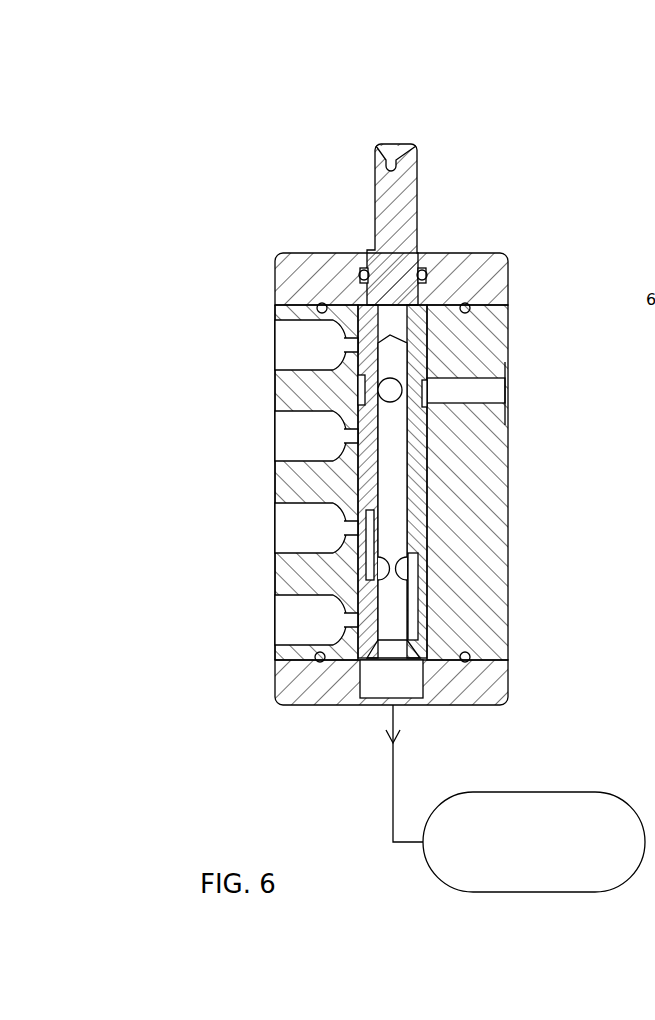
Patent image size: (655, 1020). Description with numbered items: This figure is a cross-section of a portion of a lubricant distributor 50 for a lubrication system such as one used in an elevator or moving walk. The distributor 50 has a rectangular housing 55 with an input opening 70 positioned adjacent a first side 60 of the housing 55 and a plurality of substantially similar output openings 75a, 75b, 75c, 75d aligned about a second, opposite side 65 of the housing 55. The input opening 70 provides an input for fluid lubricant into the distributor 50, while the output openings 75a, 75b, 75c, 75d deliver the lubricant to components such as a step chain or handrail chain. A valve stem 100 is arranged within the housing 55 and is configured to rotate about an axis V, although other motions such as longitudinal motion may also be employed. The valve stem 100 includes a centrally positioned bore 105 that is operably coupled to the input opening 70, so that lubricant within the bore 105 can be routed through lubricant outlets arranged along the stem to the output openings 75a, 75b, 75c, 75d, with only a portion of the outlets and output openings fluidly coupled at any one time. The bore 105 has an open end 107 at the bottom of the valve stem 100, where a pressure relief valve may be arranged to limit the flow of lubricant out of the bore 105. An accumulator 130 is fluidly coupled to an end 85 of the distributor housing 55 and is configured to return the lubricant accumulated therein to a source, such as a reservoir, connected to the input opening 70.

The distributor 50 is at (258, 184).
The housing 55 is at (300, 680).
The first side 60 is at (508, 484).
The second side 65 is at (275, 478).
The input opening 70 is at (487, 385).
The output opening 75a is at (302, 340).
The output opening 75b is at (300, 428).
The output opening 75c is at (302, 520).
The output opening 75d is at (305, 613).
The end of the distributor housing 85 is at (477, 707).
The valve stem 100 is at (394, 261).
The bore 105 is at (390, 497).
The open end of the bore 107 is at (385, 665).
The accumulator 130 is at (534, 842).